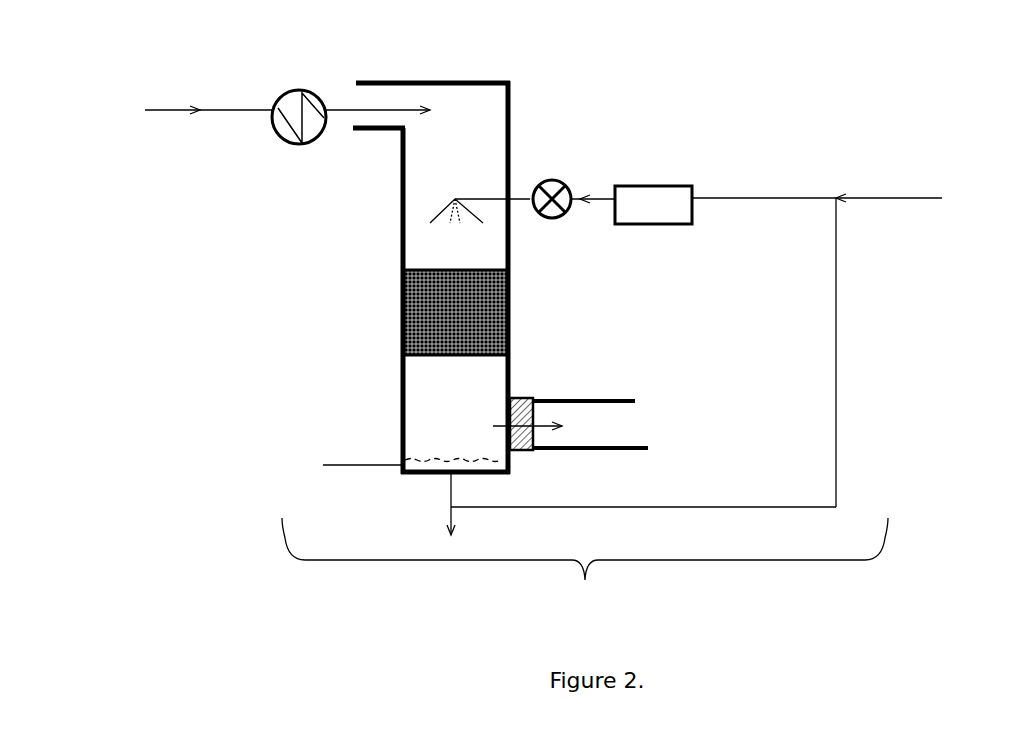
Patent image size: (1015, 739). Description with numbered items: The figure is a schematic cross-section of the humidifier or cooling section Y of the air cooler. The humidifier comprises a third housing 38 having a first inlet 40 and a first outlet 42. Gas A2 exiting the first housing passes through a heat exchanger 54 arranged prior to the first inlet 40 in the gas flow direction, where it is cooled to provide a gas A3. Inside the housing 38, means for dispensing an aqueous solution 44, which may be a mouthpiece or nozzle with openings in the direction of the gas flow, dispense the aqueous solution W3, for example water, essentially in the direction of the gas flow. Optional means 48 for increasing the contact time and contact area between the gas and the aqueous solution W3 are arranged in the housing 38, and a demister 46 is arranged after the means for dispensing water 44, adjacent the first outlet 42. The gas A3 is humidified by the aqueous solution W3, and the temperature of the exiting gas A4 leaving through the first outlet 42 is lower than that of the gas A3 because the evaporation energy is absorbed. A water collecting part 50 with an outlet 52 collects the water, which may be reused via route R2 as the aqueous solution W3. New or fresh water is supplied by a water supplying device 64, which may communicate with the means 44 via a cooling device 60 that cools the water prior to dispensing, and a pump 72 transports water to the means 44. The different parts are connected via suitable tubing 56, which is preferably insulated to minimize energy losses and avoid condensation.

The third housing 38 is at (368, 265).
The first inlet 40 is at (341, 79).
The first outlet 42 is at (567, 412).
The means for dispensing an aqueous solution 44 is at (430, 199).
The demister 46 is at (519, 396).
The means for increasing the contact time and contact area 48 is at (401, 312).
The water collecting part 50 is at (375, 461).
The outlet 52 is at (463, 487).
The heat exchanger 54 is at (293, 109).
The tubing 56 is at (776, 183).
The cooling device 60 is at (631, 189).
The water supplying device 64 is at (637, 332).
The pump 72 is at (552, 187).
The gas exiting the first housing A2 is at (208, 99).
The cooled gas A3 is at (378, 99).
The exiting gas A4 is at (556, 429).
The aqueous solution W3 is at (447, 249).
The route for reusing collected water R2 is at (872, 279).
The humidifier Y is at (585, 577).